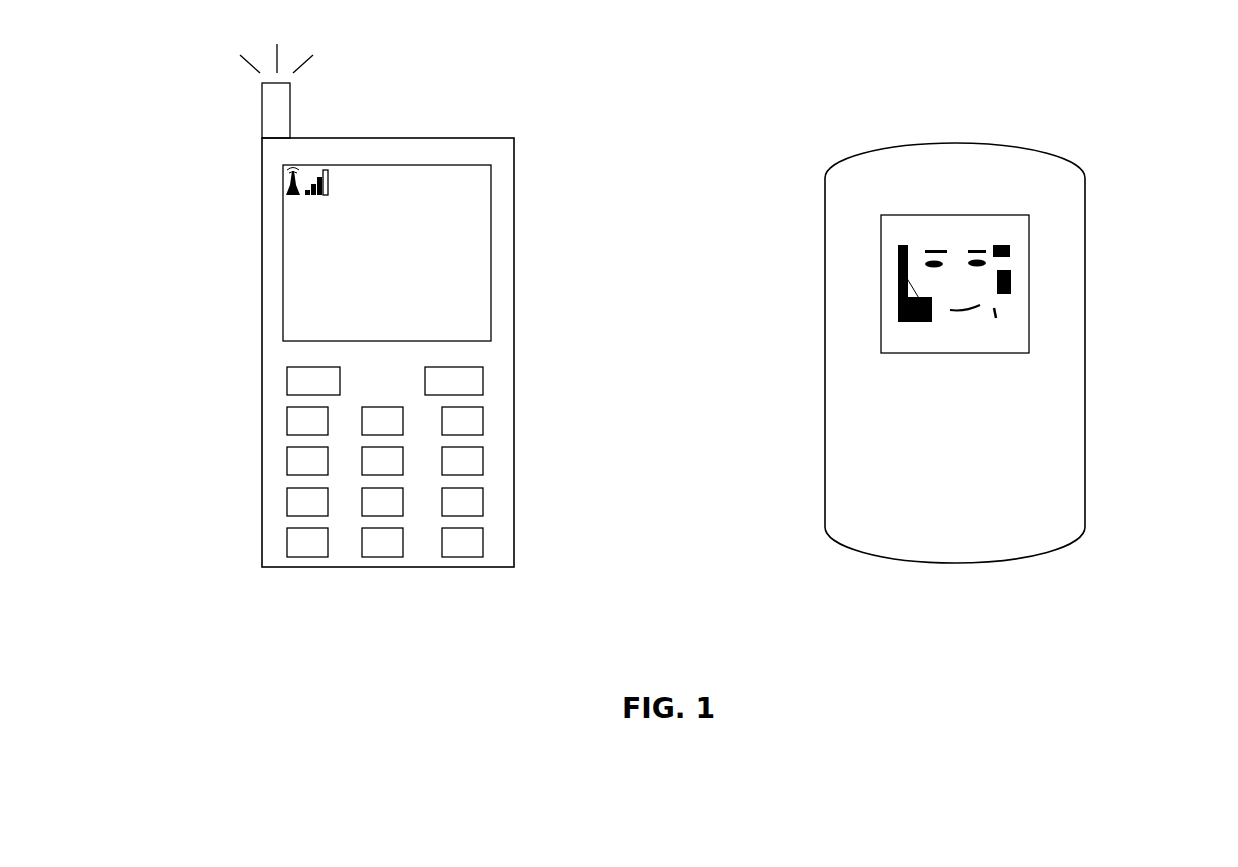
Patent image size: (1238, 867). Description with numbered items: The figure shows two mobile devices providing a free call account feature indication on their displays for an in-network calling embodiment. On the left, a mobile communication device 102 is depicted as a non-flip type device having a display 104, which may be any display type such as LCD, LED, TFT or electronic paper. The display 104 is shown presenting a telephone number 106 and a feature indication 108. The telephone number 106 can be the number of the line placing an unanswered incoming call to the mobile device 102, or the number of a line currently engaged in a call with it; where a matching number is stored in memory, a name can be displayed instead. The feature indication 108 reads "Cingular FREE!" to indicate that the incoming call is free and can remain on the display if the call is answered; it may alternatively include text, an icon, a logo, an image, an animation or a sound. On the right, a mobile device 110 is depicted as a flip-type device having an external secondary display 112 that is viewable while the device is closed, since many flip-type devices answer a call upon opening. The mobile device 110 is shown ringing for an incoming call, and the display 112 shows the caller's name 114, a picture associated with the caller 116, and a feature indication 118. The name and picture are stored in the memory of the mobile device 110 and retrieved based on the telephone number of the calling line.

The mobile communication device 102 is at (351, 305).
The display 104 is at (449, 253).
The telephone number 106 is at (471, 334).
The feature indication 108 is at (482, 273).
The mobile device 110 is at (918, 353).
The external secondary display 112 is at (1031, 284).
The caller's name 114 is at (1021, 176).
The picture associated with the caller 116 is at (1039, 292).
The feature indication 118 is at (1044, 360).